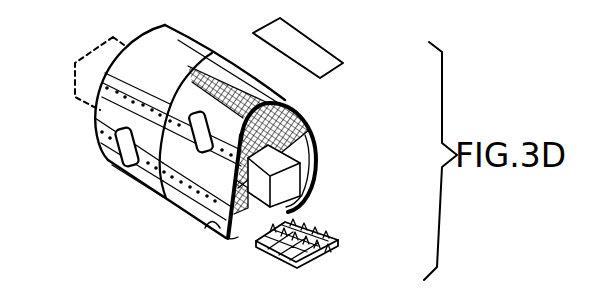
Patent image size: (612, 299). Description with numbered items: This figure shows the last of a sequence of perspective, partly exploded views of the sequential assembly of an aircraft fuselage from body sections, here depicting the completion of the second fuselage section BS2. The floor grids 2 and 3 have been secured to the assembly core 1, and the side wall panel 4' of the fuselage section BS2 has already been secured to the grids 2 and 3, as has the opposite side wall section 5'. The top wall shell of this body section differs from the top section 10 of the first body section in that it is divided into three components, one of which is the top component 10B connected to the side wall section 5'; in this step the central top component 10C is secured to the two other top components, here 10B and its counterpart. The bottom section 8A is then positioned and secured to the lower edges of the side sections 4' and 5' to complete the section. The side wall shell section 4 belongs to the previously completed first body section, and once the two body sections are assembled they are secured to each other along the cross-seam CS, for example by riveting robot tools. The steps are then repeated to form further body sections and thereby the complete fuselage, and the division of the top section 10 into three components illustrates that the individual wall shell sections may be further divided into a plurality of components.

The top section 10 is at (171, 48).
The top wall shell component 10B is at (276, 97).
The central top component 10C is at (297, 43).
The floor grid 2 is at (308, 131).
The side wall section 5' is at (292, 174).
The assembly core 1 is at (287, 173).
The bottom section 8A is at (320, 257).
The floor grid 3 is at (249, 213).
The side wall shell section 4 is at (115, 132).
The side wall panel 4' is at (186, 174).
The cross-seam CS is at (160, 193).
The fuselage section BS2 is at (157, 258).